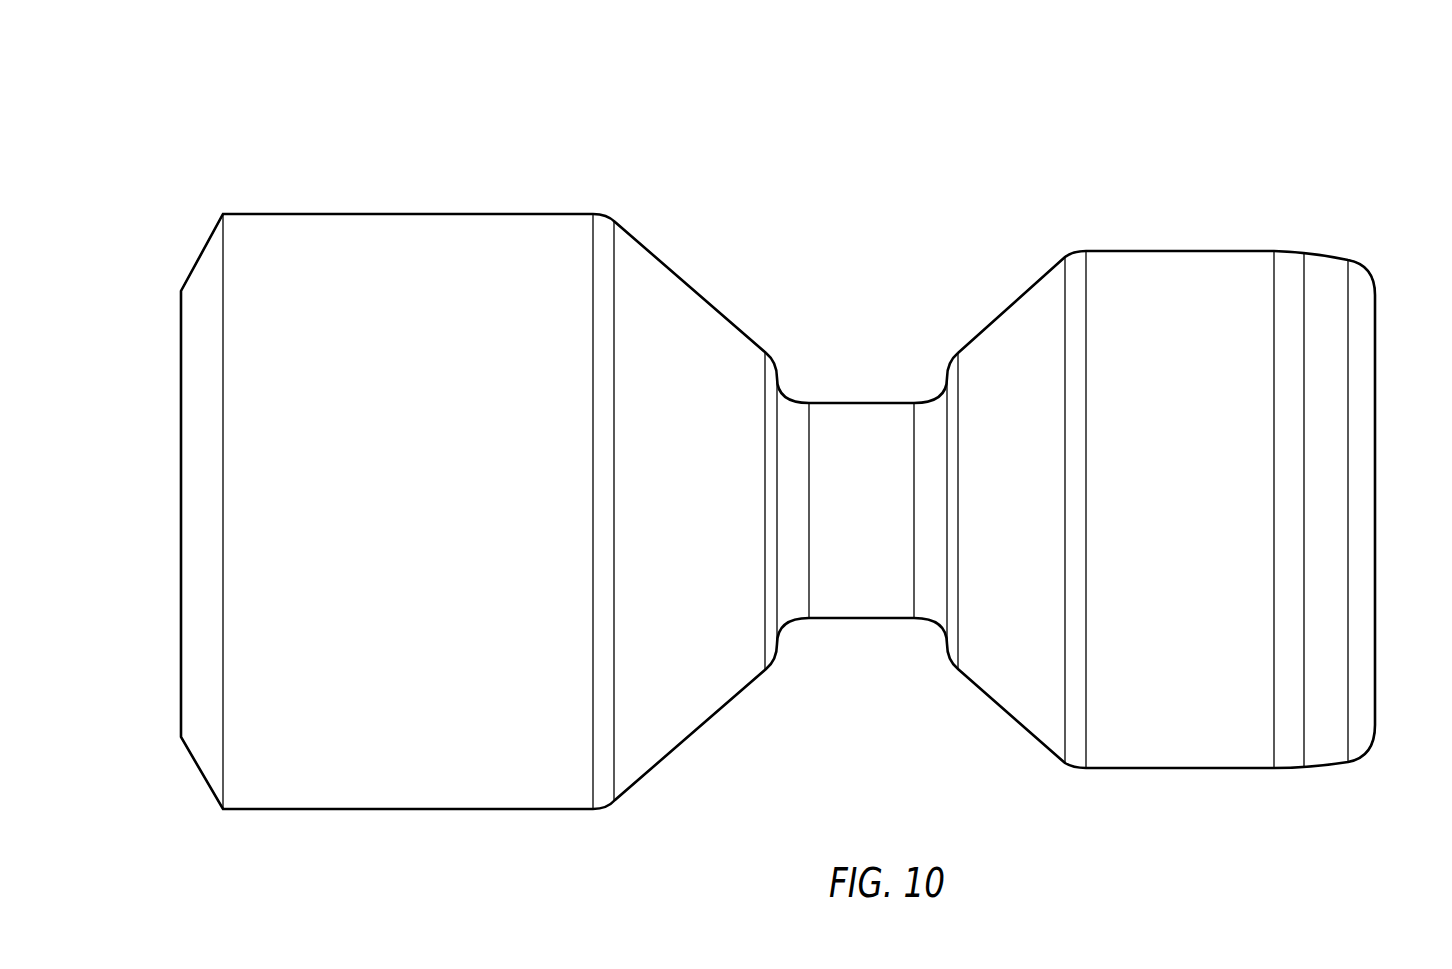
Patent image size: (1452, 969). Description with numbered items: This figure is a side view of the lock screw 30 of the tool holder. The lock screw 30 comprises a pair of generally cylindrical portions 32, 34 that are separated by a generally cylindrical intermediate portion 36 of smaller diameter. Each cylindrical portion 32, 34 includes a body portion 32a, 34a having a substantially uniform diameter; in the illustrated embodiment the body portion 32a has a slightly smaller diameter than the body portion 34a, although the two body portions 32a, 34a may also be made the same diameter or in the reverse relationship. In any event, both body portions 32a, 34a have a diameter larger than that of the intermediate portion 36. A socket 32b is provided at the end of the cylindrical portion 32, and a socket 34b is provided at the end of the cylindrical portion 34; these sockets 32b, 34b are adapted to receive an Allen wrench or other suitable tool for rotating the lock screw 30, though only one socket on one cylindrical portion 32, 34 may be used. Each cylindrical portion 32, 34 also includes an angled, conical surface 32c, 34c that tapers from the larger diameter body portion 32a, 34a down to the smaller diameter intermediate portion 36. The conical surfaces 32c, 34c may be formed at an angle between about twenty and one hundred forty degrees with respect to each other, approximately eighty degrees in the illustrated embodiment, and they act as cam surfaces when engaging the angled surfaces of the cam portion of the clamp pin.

The lock screw 30 is at (1226, 93).
The cylindrical portion 32 is at (1282, 208).
The body portion 32a is at (1186, 250).
The socket 32b is at (1378, 330).
The conical surface 32c is at (1013, 303).
The cylindrical portion 34 is at (460, 158).
The body portion 34a is at (346, 213).
The socket 34b is at (181, 333).
The conical surface 34c is at (712, 303).
The intermediate portion 36 is at (850, 340).